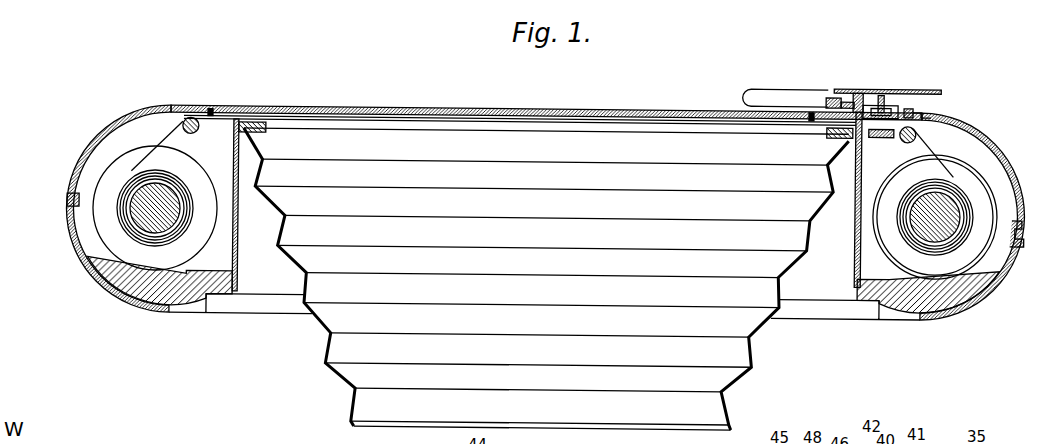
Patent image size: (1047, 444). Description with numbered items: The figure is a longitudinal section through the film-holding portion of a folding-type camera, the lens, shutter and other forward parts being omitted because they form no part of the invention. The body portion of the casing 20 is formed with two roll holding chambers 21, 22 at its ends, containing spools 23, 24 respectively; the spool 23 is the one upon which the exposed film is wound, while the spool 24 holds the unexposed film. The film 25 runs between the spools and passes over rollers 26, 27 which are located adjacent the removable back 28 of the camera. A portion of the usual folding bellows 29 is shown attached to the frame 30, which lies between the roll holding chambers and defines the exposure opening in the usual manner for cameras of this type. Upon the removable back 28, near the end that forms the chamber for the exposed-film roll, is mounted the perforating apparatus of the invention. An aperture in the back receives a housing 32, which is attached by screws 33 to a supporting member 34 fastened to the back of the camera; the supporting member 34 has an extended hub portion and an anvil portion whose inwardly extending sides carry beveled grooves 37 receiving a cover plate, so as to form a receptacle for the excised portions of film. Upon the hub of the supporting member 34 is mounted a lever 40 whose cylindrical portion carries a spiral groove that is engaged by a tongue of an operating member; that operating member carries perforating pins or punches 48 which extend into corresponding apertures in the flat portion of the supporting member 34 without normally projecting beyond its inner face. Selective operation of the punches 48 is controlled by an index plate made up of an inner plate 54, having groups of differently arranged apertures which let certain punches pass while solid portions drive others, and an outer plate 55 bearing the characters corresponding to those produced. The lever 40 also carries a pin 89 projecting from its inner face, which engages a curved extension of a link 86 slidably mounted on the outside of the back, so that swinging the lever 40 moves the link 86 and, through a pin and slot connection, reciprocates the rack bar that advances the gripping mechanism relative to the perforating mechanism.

The body portion of the casing 20 is at (187, 297).
The roll holding chamber 21 is at (962, 274).
The roll holding chamber 22 is at (85, 232).
The spool 23 is at (970, 164).
The spool 24 is at (110, 170).
The film 25 is at (925, 128).
The roller 26 is at (905, 134).
The roller 27 is at (194, 132).
The removable back 28 is at (278, 103).
The folding bellows 29 is at (545, 279).
The frame 30 is at (238, 216).
The housing 32 is at (900, 99).
The screws 33 is at (913, 104).
The supporting member 34 is at (922, 113).
The beveled grooves 37 is at (861, 158).
The lever 40 is at (800, 82).
The perforating pins or punches 48 is at (882, 92).
The inner plate 54 is at (938, 84).
The outer plate 55 is at (850, 93).
The link 86 is at (836, 88).
The pin 89 is at (858, 95).